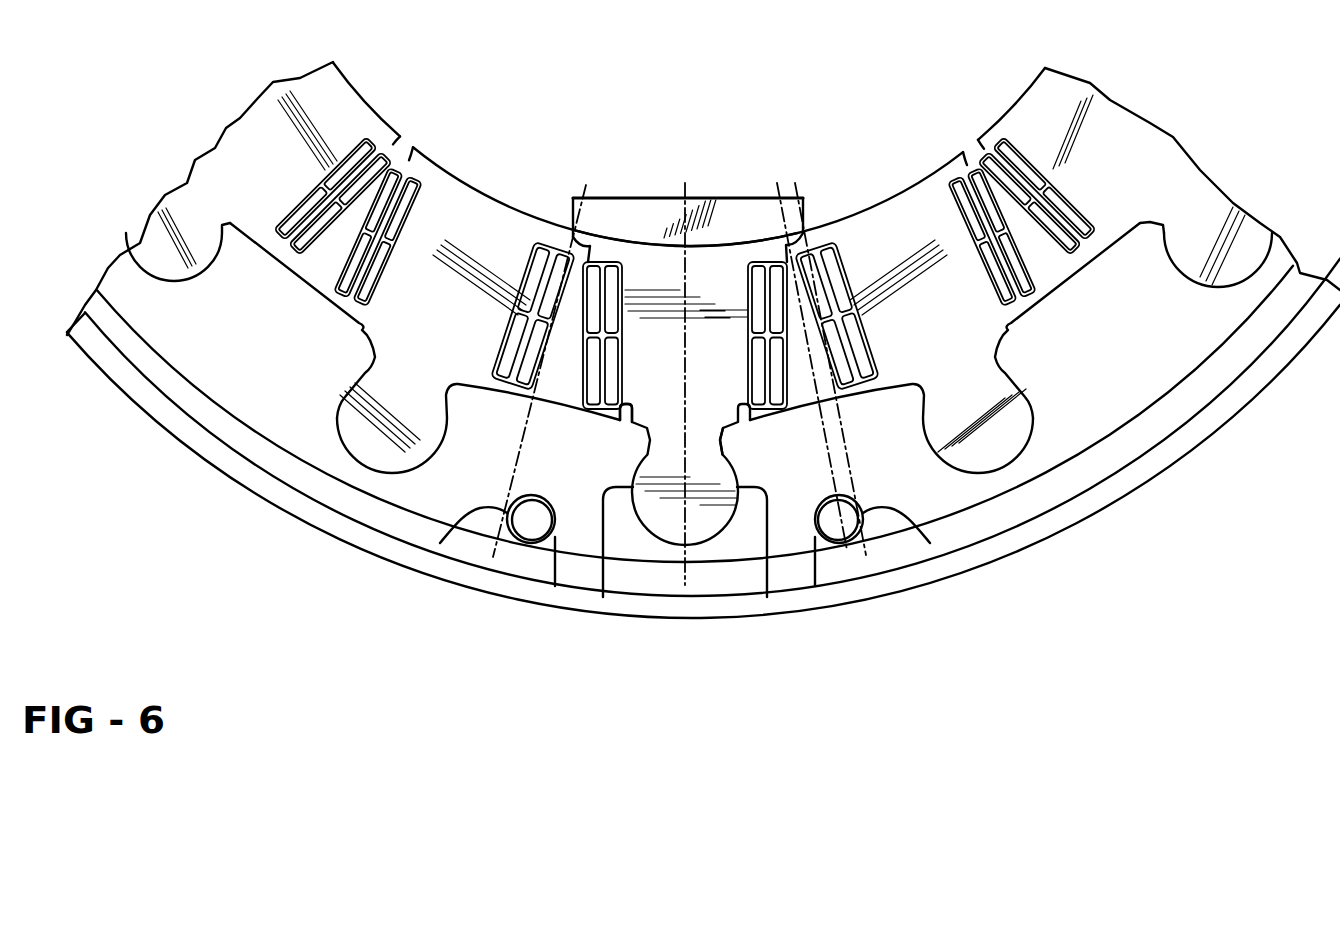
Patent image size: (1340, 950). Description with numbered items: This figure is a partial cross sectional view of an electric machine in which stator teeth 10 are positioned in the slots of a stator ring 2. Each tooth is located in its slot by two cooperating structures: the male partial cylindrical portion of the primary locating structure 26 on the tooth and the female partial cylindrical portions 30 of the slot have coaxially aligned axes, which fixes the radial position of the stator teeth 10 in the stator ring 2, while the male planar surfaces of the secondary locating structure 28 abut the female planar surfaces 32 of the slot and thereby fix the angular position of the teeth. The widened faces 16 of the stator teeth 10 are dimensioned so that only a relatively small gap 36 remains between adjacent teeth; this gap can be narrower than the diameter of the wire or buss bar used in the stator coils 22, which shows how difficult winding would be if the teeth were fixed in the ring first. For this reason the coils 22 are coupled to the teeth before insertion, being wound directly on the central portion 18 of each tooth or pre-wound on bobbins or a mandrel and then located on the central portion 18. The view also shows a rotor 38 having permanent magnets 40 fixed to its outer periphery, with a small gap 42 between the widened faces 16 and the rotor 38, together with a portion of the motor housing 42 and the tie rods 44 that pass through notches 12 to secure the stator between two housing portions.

The stator ring 2 is at (327, 510).
The stator teeth 10 is at (640, 260).
The notches 12 is at (522, 560).
The widened faces 16 is at (728, 240).
The central portion 18 is at (685, 348).
The stator coils 22 is at (782, 400).
The primary locating structure 26 is at (700, 512).
The secondary locating structure 28 is at (728, 442).
The female partial cylindrical portions 30 is at (603, 503).
The female planar surfaces 32 is at (620, 422).
The gap 36 is at (582, 242).
The rotor 38 is at (818, 208).
The permanent magnets 40 is at (655, 210).
The gap 42 is at (710, 237).
The tie rods 44 is at (528, 520).